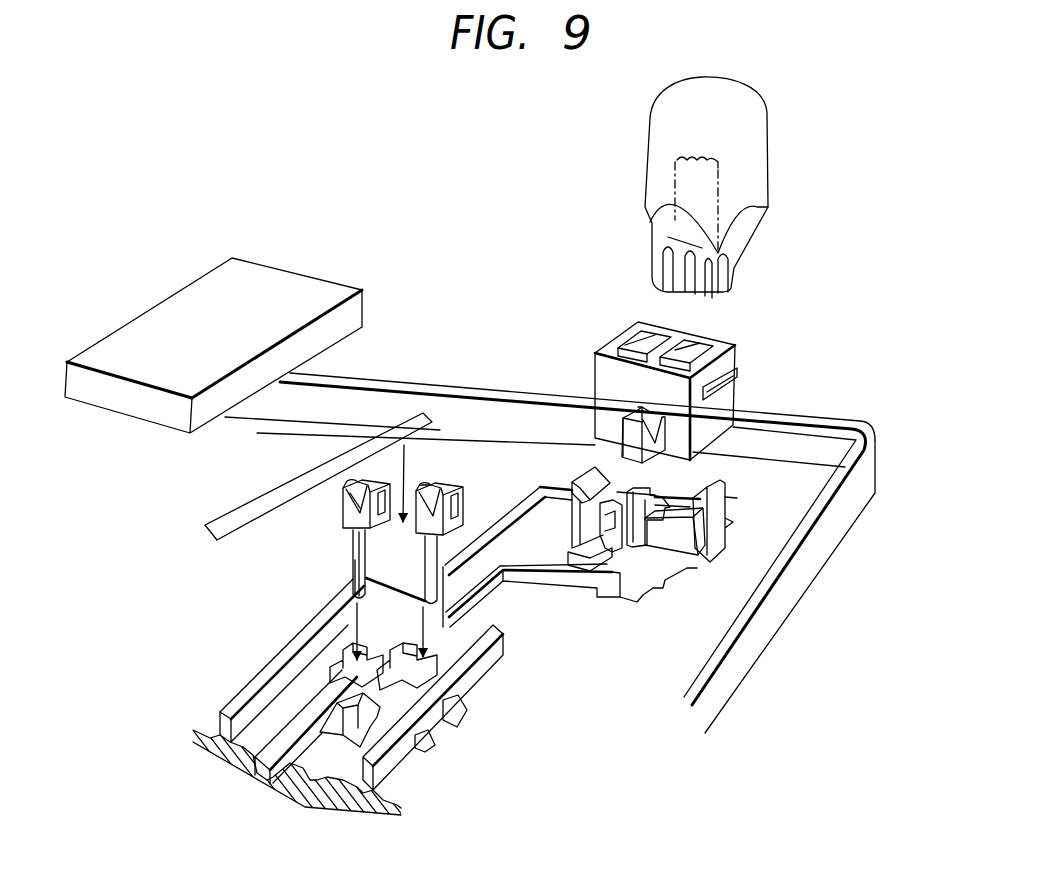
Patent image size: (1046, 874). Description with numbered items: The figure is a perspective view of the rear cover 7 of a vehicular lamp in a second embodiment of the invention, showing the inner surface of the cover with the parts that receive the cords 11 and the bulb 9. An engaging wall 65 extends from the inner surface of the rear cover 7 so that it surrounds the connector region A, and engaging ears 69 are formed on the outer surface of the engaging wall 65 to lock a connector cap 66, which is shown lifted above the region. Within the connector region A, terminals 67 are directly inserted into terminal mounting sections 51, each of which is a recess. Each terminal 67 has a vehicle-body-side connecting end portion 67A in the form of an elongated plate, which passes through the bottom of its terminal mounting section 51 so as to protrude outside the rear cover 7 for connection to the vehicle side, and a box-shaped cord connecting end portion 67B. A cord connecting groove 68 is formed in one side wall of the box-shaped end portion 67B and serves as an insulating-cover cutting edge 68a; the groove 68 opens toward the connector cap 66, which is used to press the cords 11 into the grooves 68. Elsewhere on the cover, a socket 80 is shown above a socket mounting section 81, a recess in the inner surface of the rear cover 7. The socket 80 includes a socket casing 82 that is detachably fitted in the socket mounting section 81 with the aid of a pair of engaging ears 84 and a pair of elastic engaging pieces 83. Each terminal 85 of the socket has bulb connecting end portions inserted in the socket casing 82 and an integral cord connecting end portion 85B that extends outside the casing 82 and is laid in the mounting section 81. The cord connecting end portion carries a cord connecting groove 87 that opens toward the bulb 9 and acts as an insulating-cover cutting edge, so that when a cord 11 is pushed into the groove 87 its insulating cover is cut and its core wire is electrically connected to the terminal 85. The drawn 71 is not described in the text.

The rear cover 7 is at (690, 652).
The bulb 9 is at (767, 168).
The cord 11 is at (233, 517).
The terminal mounting section 51 is at (343, 660).
The engaging wall 65 is at (480, 667).
The connector cap 66 is at (143, 328).
The terminal 67 is at (381, 551).
The vehicle-body-side connecting end portion 67A is at (355, 565).
The box-shaped cord connecting end portion 67B is at (345, 507).
The cord connecting groove 68 is at (390, 482).
The insulating-cover cutting edge 68a is at (352, 481).
The engaging ear 69 is at (437, 717).
The engaging hole 71 is at (385, 500).
The socket 80 is at (748, 325).
The socket mounting section 81 is at (677, 565).
The socket casing 82 is at (730, 358).
The elastic engaging piece 83 is at (715, 503).
The engaging ear 84 is at (740, 391).
The terminal 85 is at (674, 443).
The cord connecting end portion 85B is at (622, 440).
The cord connecting groove 87 is at (650, 420).
The connector region A is at (423, 767).